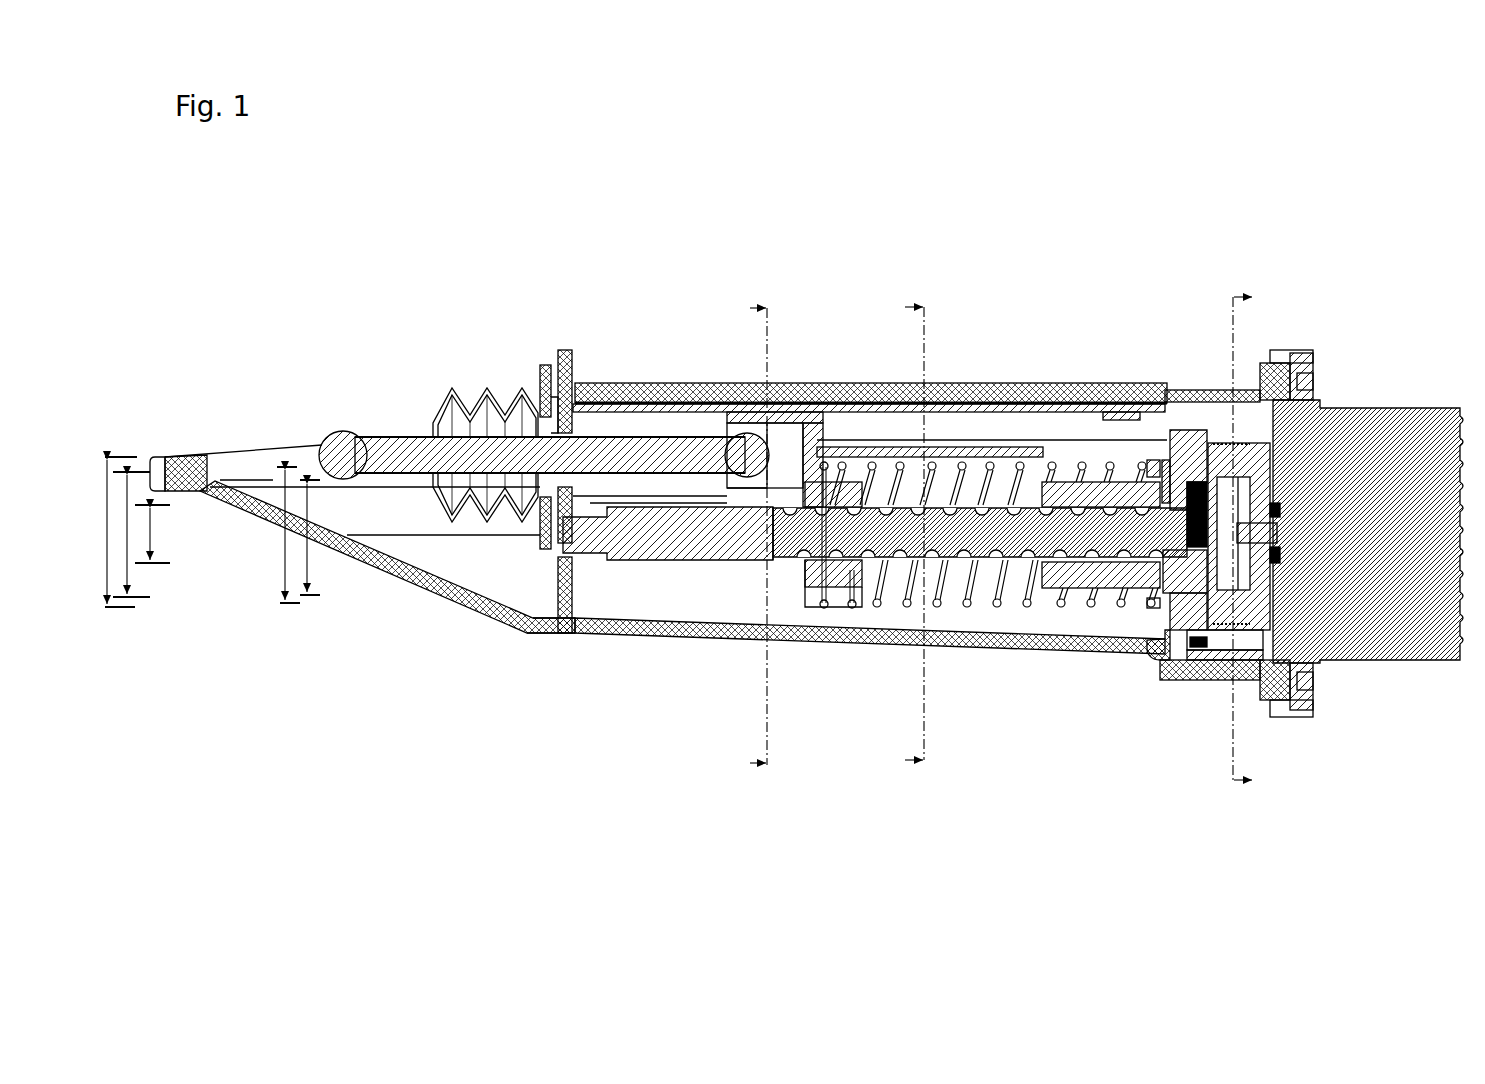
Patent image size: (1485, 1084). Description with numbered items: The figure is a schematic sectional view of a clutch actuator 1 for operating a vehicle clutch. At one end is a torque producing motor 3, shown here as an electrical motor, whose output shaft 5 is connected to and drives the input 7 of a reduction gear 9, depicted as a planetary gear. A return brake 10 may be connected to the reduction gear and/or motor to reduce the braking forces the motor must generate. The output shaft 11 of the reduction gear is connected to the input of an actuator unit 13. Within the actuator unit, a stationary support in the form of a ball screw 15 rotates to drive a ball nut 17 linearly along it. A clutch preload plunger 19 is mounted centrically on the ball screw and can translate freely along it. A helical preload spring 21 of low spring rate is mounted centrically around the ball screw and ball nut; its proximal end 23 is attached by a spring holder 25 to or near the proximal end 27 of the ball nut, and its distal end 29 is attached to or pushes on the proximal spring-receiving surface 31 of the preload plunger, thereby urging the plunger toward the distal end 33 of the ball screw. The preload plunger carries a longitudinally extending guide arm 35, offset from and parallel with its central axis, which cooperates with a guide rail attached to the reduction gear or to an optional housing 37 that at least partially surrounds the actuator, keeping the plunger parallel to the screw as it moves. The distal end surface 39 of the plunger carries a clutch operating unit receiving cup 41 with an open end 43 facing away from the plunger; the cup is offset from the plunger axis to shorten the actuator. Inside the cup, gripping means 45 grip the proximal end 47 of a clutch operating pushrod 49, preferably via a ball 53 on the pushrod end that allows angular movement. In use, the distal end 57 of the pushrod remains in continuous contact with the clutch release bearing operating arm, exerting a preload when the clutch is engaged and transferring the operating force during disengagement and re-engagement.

The clutch actuator 1 is at (636, 247).
The torque producing motor 3 is at (1325, 447).
The output shaft 5 is at (1285, 360).
The input 7 is at (1200, 417).
The reduction gear 9 is at (1177, 447).
The return brake 10 is at (1235, 678).
The output shaft 11 is at (1170, 656).
The actuator unit 13 is at (1057, 425).
The ball screw 15 is at (748, 622).
The ball nut 17 is at (1040, 600).
The clutch preload plunger 19 is at (852, 602).
The helical preload spring 21 is at (932, 473).
The proximal end 23 is at (1158, 645).
The spring holder 25 is at (1153, 608).
The proximal end 27 is at (1155, 450).
The distal end 29 is at (820, 605).
The proximal spring-receiving surface 31 is at (866, 505).
The distal end 33 is at (775, 560).
The guide arm 35 is at (593, 450).
The housing 37 is at (566, 355).
The distal end surface 39 is at (800, 600).
The clutch operating unit receiving cup 41 is at (827, 402).
The open end 43 is at (745, 485).
The gripping means 45 is at (745, 488).
The proximal end 47 is at (740, 433).
The clutch operating pushrod 49 is at (368, 440).
The ball 53 is at (722, 530).
The distal end 57 is at (335, 415).